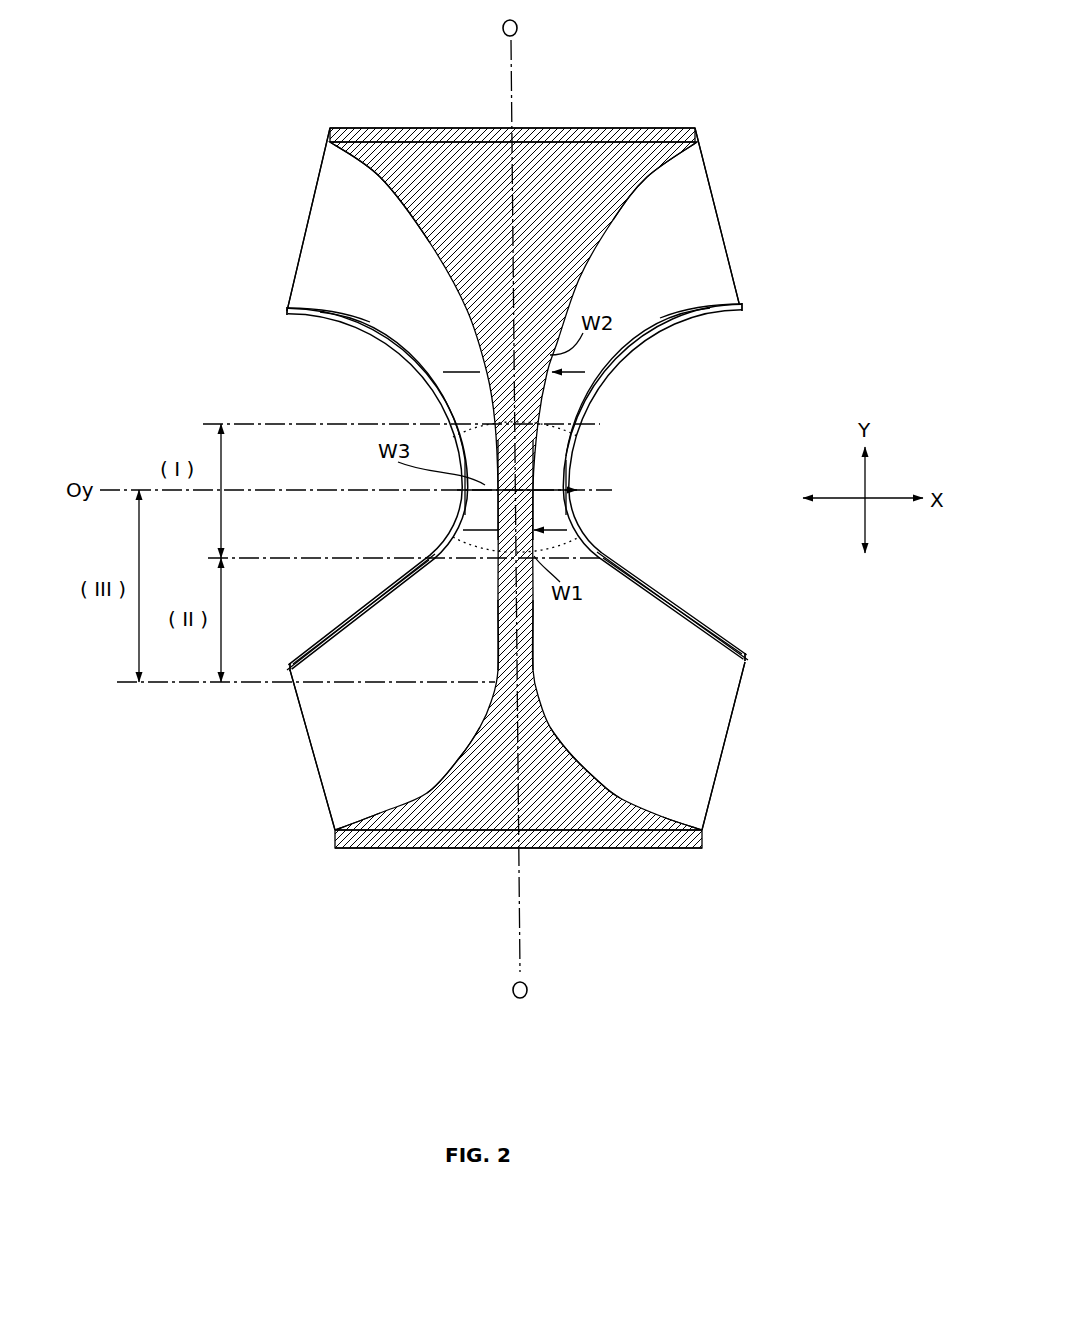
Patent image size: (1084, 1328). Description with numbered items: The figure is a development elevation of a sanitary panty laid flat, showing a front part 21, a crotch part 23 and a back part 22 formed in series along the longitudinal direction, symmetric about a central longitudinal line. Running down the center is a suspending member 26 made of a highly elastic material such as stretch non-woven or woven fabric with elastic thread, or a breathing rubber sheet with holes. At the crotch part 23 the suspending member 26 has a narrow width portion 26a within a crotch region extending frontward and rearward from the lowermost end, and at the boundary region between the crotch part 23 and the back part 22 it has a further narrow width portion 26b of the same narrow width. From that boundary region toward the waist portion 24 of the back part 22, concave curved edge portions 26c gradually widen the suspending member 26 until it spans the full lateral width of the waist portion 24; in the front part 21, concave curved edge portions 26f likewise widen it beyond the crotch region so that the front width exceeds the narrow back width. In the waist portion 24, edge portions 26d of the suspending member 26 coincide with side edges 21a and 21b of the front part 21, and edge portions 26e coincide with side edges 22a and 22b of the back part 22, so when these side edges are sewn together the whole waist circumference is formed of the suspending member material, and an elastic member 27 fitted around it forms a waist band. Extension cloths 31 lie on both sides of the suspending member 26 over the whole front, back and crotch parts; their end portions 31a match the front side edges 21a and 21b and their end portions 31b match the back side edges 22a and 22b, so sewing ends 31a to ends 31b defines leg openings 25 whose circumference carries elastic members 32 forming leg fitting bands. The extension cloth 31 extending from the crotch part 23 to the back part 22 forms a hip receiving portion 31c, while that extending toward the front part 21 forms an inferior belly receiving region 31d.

The front part 21 is at (737, 252).
The side edge of the front part 21a is at (711, 178).
The side edge of the front part 21b is at (306, 204).
The back part 22 is at (750, 700).
The side edge of the back part 22a is at (737, 745).
The side edge of the back part 22b is at (310, 763).
The crotch part 23 is at (584, 504).
The waist portion 24 is at (593, 126).
The leg openings 25 is at (388, 369).
The suspending member 26 is at (541, 622).
The narrow width portion 26a is at (534, 463).
The narrow width portion 26b is at (537, 637).
The concave curved edge portions 26c is at (428, 791).
The edge portions 26d is at (328, 146).
The edge portions 26e is at (335, 831).
The concave curved edge portions 26f is at (404, 226).
The elastic member 27 is at (458, 128).
The extension cloths 31 is at (303, 644).
The end portions of the extension cloths 31a is at (290, 272).
The end portions of the extension cloths 31b is at (293, 701).
The hip receiving portion 31c is at (353, 633).
The inferior belly receiving region 31d is at (318, 287).
The elastic members 32 is at (394, 590).